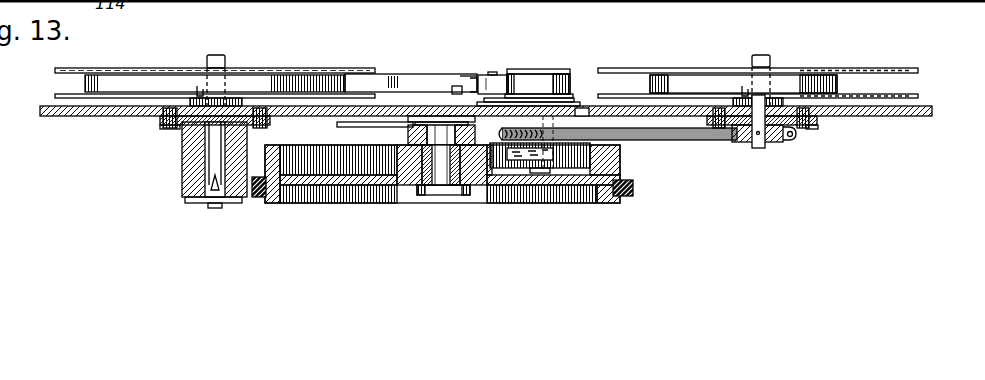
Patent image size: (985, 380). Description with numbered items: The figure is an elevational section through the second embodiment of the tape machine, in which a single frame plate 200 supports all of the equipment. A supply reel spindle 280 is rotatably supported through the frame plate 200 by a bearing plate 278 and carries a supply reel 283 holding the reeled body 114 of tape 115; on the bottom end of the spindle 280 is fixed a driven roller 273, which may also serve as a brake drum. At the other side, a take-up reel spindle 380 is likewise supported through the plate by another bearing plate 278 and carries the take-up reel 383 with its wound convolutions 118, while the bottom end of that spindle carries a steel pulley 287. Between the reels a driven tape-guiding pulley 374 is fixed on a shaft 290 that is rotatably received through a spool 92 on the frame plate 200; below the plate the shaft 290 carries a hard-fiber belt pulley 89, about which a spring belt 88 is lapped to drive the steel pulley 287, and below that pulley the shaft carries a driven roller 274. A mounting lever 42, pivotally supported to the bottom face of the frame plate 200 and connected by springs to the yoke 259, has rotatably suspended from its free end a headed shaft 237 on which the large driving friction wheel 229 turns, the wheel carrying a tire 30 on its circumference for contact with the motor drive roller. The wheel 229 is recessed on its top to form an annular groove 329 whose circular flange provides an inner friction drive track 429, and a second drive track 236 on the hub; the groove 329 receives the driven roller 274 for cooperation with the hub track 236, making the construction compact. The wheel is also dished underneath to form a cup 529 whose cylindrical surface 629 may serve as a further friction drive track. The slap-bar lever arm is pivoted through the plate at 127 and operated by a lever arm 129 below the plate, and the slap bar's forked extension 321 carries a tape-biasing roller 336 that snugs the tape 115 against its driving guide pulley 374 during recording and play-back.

The tire 30 is at (263, 200).
The mounting lever 42 is at (412, 128).
The spring belt 88 is at (735, 139).
The belt pulley 89 is at (567, 128).
The spool 92 is at (576, 108).
The reeled body of tape 114 is at (143, 83).
The tape 115 is at (382, 75).
The body of reeled convolutions 118 is at (824, 73).
The pivot hole 127 is at (458, 86).
The lever arm 129 is at (420, 116).
The frame plate 200 is at (926, 108).
The driving friction wheel 229 is at (348, 186).
The hub friction drive track 236 is at (392, 160).
The headed shaft 237 is at (458, 196).
The yoke 259 is at (337, 126).
The driven roller 273 is at (182, 158).
The driven roller 274 is at (590, 161).
The bearing plate 278 is at (160, 122).
The supply reel spindle 280 is at (213, 61).
The supply reel 283 is at (275, 72).
The pulley 287 is at (789, 142).
The shaft 290 is at (538, 173).
The forked extension 321 is at (492, 73).
The annular groove 329 is at (362, 186).
The tape-biasing roller 336 is at (477, 78).
The driven tape-guiding pulley 374 is at (557, 70).
The take-up reel spindle 380 is at (770, 58).
The take-up reel 383 is at (887, 68).
The inner annular friction drive track 429 is at (283, 165).
The cup 529 is at (557, 185).
The cylindrical drive track 629 is at (600, 203).